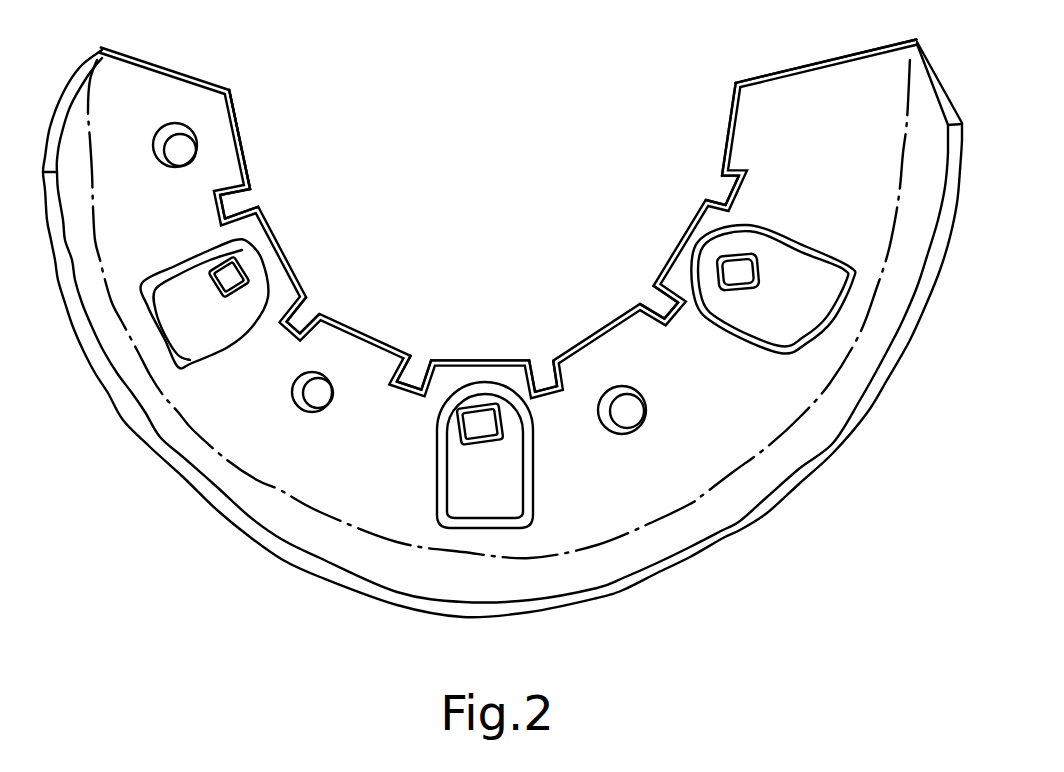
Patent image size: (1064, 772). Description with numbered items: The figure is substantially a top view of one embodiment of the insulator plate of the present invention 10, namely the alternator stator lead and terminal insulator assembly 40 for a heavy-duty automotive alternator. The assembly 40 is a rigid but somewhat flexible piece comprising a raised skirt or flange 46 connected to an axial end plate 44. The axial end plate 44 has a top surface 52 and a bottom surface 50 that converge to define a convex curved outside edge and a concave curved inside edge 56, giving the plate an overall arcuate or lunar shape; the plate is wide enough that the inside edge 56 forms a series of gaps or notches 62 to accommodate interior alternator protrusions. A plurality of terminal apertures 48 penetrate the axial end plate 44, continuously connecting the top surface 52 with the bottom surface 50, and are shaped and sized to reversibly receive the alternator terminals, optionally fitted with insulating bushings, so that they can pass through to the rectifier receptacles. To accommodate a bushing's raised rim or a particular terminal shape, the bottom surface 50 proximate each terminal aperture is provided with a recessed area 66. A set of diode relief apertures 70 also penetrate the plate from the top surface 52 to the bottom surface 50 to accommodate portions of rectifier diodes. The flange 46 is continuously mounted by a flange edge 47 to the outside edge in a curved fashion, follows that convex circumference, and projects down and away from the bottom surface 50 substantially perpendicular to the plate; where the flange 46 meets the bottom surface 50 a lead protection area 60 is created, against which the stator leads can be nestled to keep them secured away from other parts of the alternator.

The present invention 10 is at (455, 167).
The alternator stator lead and terminal insulator assembly 40 is at (518, 168).
The axial end plate 44 is at (177, 72).
The flange 46 is at (963, 172).
The flange edge 47 is at (597, 543).
The terminal apertures 48 is at (240, 275).
The bottom surface 50 is at (797, 133).
The top surface 52 is at (737, 83).
The inside edge 56 is at (249, 158).
The lead protection area 60 is at (115, 242).
The notches 62 is at (246, 197).
The recessed area 66 is at (194, 350).
The diode relief apertures 70 is at (185, 144).